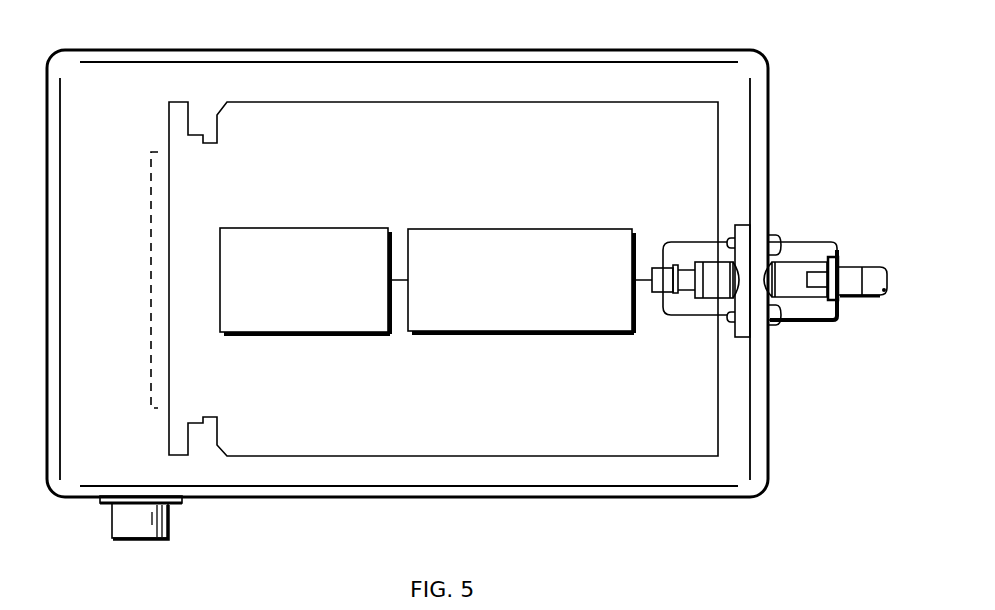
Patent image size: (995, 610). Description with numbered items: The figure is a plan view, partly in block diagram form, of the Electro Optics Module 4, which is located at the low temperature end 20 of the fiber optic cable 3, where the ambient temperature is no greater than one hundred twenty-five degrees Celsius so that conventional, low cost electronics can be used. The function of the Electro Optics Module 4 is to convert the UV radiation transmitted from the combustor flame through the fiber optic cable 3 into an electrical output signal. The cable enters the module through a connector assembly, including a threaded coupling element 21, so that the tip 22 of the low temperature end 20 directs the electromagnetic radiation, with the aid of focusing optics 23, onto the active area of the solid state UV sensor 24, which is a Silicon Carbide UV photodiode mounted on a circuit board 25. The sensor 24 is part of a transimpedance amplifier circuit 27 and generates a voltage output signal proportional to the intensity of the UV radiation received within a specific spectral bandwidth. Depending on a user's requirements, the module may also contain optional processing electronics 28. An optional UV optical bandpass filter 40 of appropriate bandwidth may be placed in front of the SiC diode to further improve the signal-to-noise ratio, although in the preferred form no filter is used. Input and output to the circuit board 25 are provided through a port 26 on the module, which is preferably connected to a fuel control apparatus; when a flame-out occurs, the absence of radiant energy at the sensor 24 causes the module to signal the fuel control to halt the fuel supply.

The fiber optic cable 3 is at (890, 268).
The Electro Optics Module 4 is at (584, 50).
The low temperature end 20 is at (875, 297).
The connector washer 21 is at (840, 262).
The tip 22 is at (827, 297).
The focusing optics 23 is at (757, 283).
The solid state UV sensor 24 is at (675, 295).
The circuit board 25 is at (203, 263).
The port 26 is at (170, 523).
The transimpedance amplifier circuit 27 is at (515, 331).
The processing electronics 28 is at (282, 332).
The UV optical bandpass filter 40 is at (692, 260).